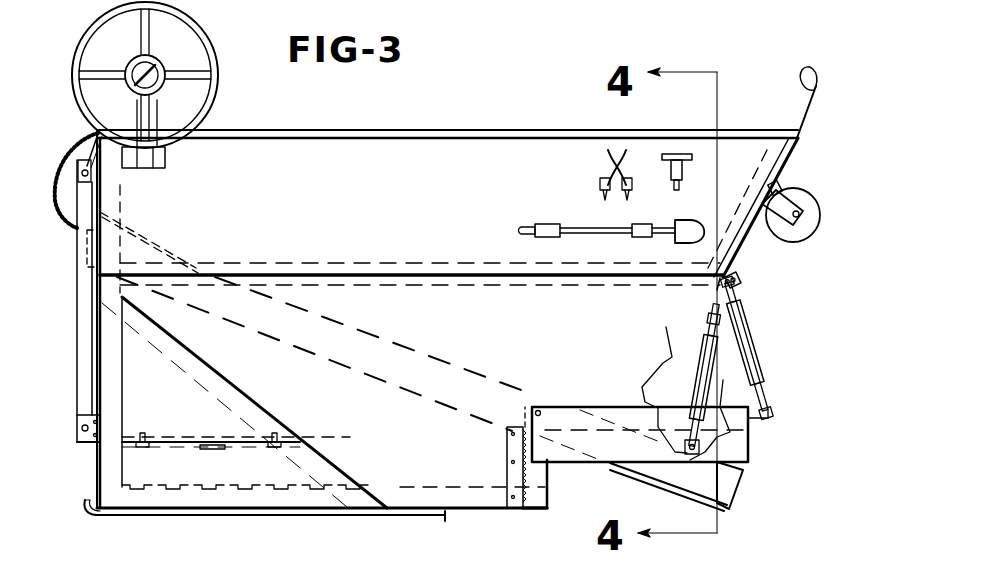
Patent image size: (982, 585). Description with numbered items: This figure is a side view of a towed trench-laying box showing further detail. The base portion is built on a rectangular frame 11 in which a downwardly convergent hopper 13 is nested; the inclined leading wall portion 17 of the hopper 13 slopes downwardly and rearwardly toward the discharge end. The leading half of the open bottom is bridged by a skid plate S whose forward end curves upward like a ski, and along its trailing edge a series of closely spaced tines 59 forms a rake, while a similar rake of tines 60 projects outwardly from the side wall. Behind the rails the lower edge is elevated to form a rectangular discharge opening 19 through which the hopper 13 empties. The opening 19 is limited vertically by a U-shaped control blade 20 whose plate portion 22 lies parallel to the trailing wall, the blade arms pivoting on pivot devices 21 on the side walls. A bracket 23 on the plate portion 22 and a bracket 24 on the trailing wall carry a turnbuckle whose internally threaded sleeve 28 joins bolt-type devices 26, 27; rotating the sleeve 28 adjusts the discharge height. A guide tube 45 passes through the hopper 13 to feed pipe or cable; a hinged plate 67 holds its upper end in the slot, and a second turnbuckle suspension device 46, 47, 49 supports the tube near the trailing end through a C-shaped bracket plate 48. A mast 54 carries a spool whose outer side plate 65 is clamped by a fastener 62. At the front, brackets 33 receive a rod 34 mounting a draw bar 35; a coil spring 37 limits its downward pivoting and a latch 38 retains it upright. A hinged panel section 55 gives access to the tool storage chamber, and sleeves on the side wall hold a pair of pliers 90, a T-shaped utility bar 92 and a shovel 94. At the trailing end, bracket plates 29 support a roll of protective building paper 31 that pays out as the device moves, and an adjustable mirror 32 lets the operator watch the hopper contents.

The rectangular frame 11 is at (124, 208).
The hopper 13 is at (372, 207).
The inclined leading wall portion 17 is at (262, 404).
The discharge opening 19 is at (552, 480).
The control blade 20 is at (652, 478).
The pivot devices 21 is at (541, 410).
The rectangular plate portion 22 is at (750, 440).
The bracket 23 is at (772, 417).
The bracket 24 is at (738, 273).
The bolt-type device 26 is at (761, 392).
The bolt-type device 27 is at (744, 296).
The internally threaded sleeve 28 is at (750, 338).
The bracket plates 29 is at (781, 200).
The roll of protective building paper 31 is at (814, 214).
The mirror 32 is at (818, 83).
The brackets 33 is at (77, 422).
The rod 34 is at (88, 443).
The draw bar 35 is at (77, 318).
The coil spring 37 is at (60, 208).
The latch 38 is at (78, 170).
The guide tube 45 is at (440, 356).
The turnbuckle suspension device 46 is at (683, 448).
The turnbuckle suspension device 47 is at (666, 327).
The C-shaped bracket plate 48 is at (716, 310).
The turnbuckle suspension device 49 is at (698, 377).
The mast 54 is at (150, 166).
The hinged panel section 55 is at (209, 479).
The tines 59 is at (447, 518).
The tines 60 is at (507, 441).
The fastener 62 is at (128, 65).
The outer side plate 65 is at (214, 50).
The plate 67 is at (125, 238).
The pliers 90 is at (612, 167).
The T-shaped utility bar 92 is at (668, 152).
The shovel 94 is at (576, 226).
The skid plate S is at (160, 516).